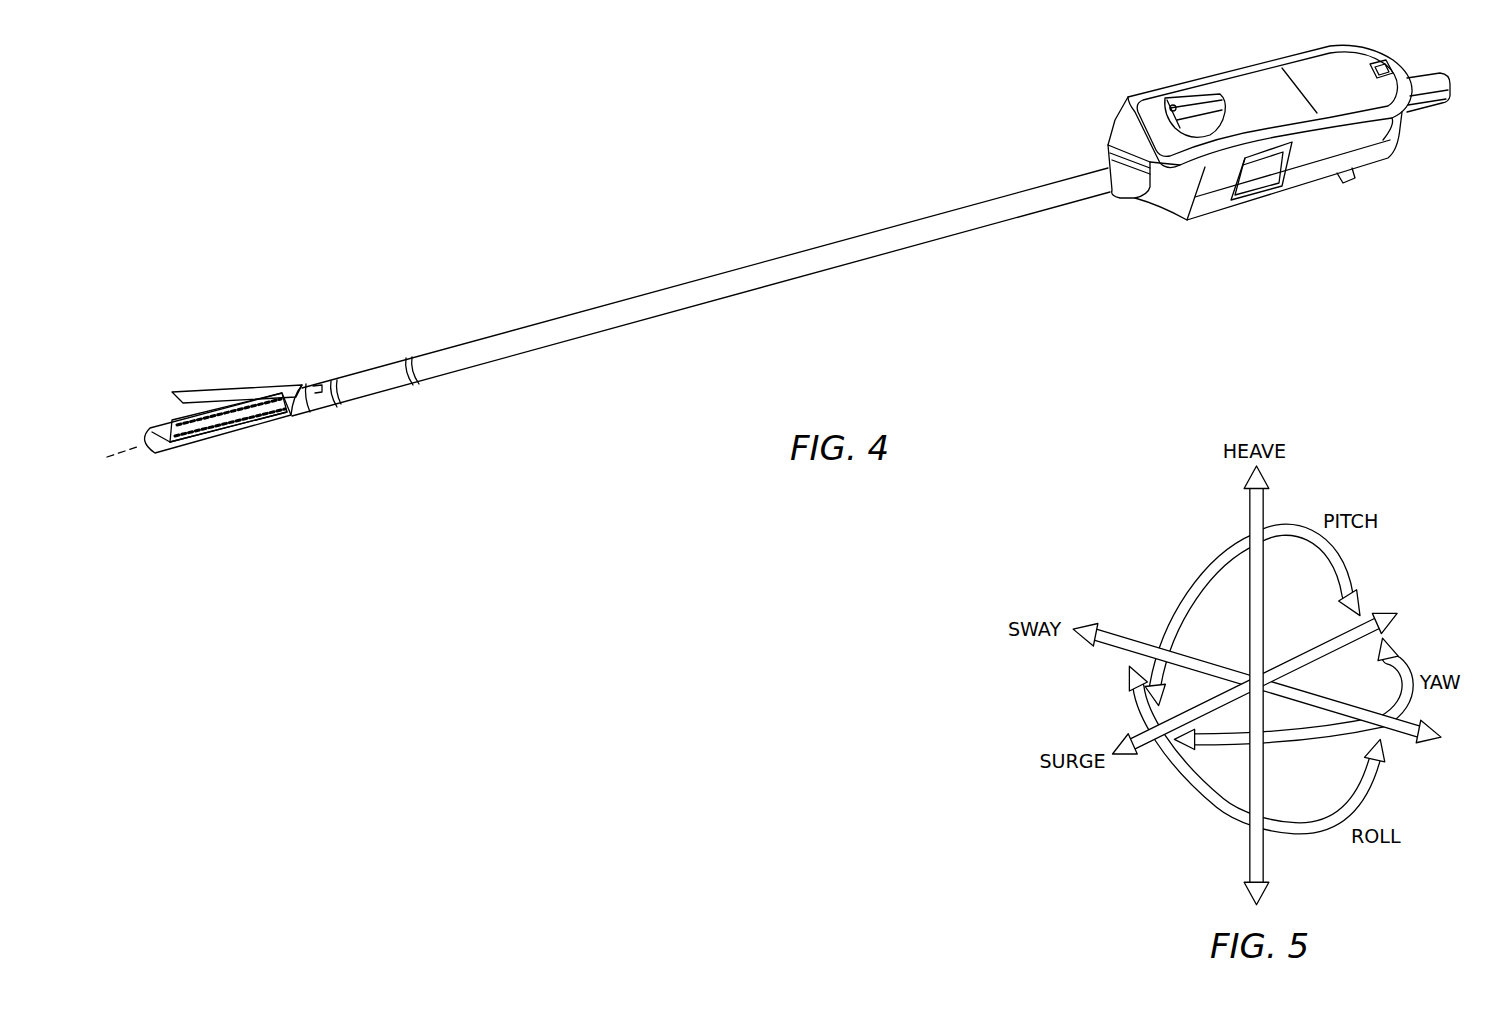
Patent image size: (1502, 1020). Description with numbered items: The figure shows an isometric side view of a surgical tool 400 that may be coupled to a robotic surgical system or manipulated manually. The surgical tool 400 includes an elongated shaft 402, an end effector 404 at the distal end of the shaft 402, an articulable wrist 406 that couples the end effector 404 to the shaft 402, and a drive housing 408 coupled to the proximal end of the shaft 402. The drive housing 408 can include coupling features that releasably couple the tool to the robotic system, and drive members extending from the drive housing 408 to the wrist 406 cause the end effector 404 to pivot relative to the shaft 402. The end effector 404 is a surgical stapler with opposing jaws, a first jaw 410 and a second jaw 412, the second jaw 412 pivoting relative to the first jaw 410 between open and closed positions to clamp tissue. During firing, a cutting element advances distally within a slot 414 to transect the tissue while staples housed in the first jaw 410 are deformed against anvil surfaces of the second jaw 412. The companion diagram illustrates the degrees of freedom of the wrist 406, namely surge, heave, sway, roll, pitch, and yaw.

The surgical tool 400 is at (837, 112).
The elongated shaft 402 is at (638, 295).
The end effector 404 is at (246, 364).
The articulable wrist 406 is at (372, 402).
The drive housing 408 is at (1307, 182).
The first jaw 410 is at (238, 428).
The second jaw 412 is at (207, 388).
The slot 414 is at (211, 416).